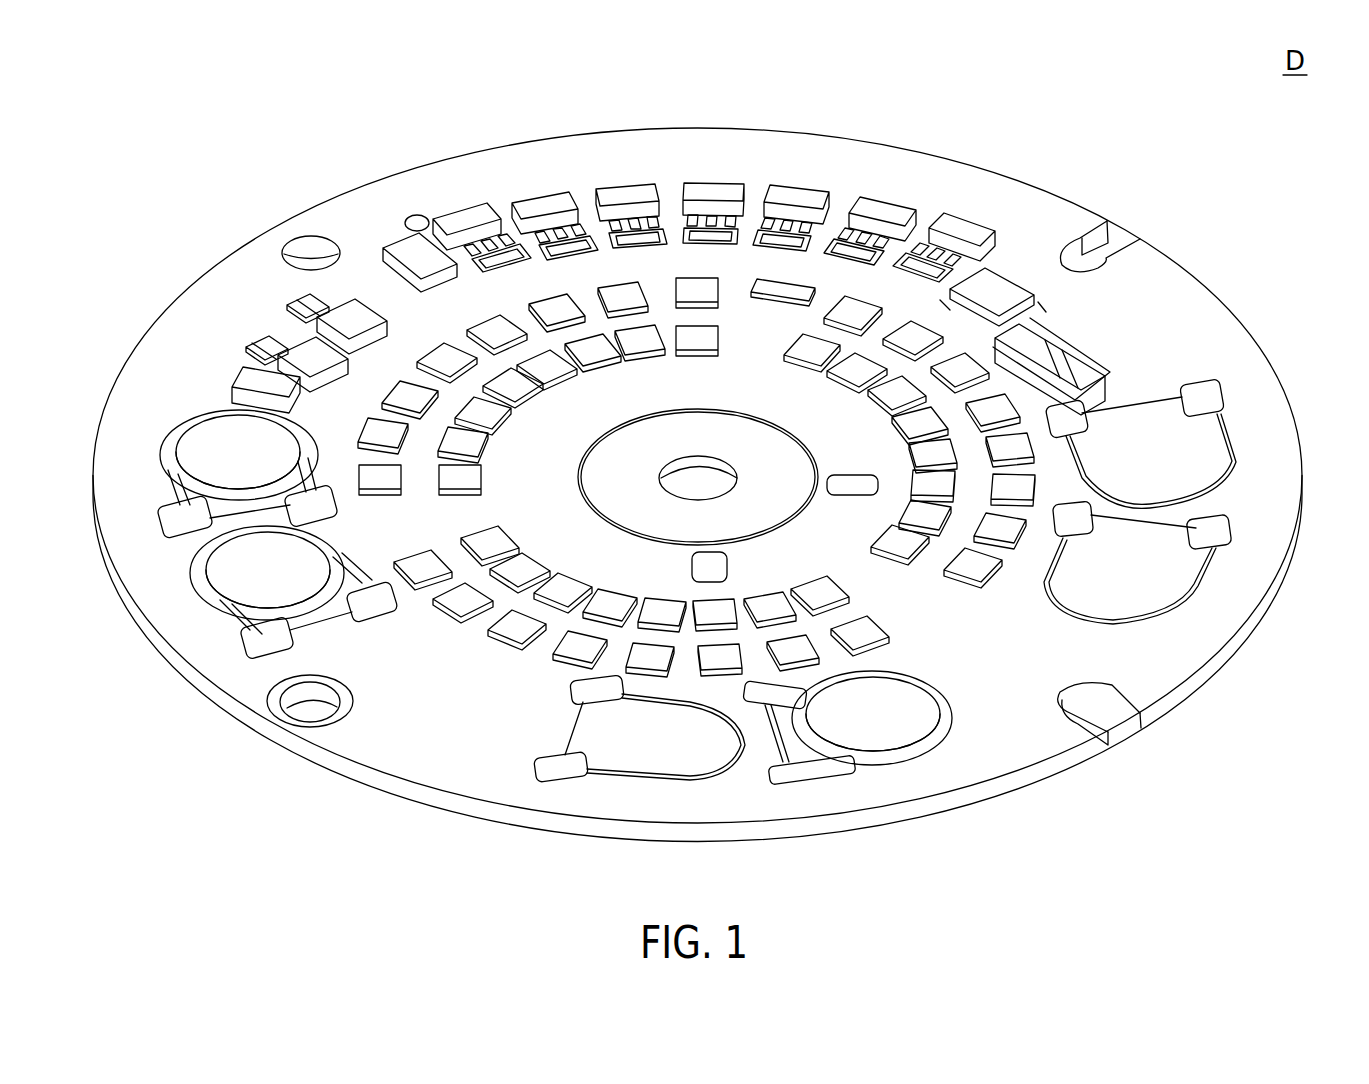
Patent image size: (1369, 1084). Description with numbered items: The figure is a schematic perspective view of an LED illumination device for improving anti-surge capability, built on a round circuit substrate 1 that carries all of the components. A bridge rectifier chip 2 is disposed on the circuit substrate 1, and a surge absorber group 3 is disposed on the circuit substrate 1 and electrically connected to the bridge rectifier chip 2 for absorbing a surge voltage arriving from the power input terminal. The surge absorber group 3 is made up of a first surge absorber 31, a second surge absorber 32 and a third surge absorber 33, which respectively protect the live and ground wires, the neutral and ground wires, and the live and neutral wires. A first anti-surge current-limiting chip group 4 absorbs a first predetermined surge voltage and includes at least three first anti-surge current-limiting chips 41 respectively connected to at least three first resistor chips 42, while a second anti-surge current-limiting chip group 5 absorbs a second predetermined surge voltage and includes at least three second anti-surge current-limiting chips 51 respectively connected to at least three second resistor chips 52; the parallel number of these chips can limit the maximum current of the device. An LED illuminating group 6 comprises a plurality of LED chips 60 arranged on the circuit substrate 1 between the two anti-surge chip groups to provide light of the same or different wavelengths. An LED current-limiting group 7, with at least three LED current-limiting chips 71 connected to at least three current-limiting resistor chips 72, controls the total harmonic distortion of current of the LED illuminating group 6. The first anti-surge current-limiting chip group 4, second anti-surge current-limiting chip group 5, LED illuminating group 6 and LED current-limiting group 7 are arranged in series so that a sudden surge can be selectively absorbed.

The circuit substrate 1 is at (1272, 362).
The bridge rectifier chip 2 is at (1006, 268).
The surge absorber group 3 is at (497, 642).
The first surge absorber 31 is at (218, 458).
The second surge absorber 32 is at (255, 580).
The third surge absorber 33 is at (893, 733).
The first anti-surge current-limiting chip group 4 is at (1000, 86).
The first anti-surge current-limiting chip 41 is at (796, 232).
The first resistor chip 42 is at (787, 200).
The second anti-surge current-limiting chip group 5 is at (485, 86).
The second anti-surge current-limiting chip 51 is at (556, 238).
The second resistor chip 52 is at (548, 209).
The LED illuminating group 6 is at (498, 644).
The LED chip 60 is at (358, 430).
The LED current-limiting group 7 is at (230, 108).
The LED current-limiting chip 71 is at (310, 350).
The current-limiting resistor chip 72 is at (266, 340).